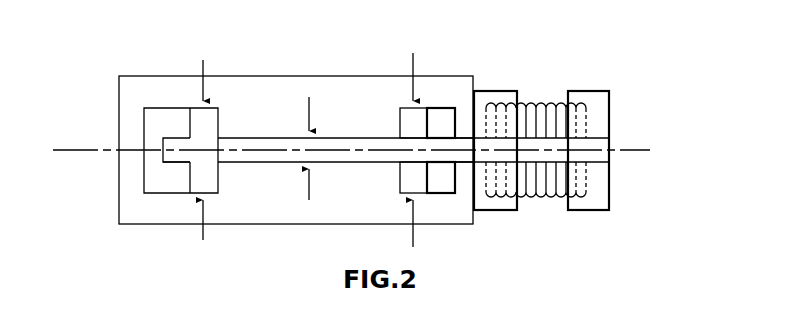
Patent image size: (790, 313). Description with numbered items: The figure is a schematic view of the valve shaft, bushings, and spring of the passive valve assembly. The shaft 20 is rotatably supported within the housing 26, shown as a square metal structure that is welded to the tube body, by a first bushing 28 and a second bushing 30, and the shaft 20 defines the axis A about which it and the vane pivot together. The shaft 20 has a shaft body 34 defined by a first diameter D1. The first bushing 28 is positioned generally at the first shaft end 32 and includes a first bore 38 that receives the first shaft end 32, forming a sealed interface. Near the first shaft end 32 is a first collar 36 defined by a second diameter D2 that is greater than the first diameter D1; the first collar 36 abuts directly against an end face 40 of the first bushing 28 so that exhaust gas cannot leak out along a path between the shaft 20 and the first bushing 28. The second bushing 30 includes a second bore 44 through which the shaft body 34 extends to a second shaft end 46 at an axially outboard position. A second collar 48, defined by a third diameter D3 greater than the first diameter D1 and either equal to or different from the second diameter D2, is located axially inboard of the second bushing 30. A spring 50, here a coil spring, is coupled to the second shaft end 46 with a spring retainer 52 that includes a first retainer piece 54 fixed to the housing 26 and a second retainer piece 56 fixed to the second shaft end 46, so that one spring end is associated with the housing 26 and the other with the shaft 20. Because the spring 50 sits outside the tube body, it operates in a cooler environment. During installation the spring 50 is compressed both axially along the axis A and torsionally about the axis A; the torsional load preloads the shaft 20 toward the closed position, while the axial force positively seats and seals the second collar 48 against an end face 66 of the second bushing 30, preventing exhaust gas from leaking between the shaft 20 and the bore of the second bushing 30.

The shaft 20 is at (286, 124).
The housing 26 is at (137, 207).
The first bushing 28 is at (153, 127).
The second bushing 30 is at (438, 120).
The first shaft end 32 is at (177, 142).
The shaft body 34 is at (263, 155).
The first collar 36 is at (210, 120).
The first bore 38 is at (177, 165).
The end face 40 is at (184, 112).
The second bore 44 is at (443, 165).
The second shaft end 46 is at (461, 138).
The second collar 48 is at (413, 127).
The spring 50 is at (543, 103).
The spring retainer 52 is at (612, 102).
The first retainer piece 54 is at (487, 91).
The second retainer piece 56 is at (587, 91).
The end face 66 is at (427, 173).
The axis A is at (80, 150).
The first diameter D1 is at (310, 112).
The second diameter D2 is at (203, 63).
The third diameter D3 is at (412, 63).